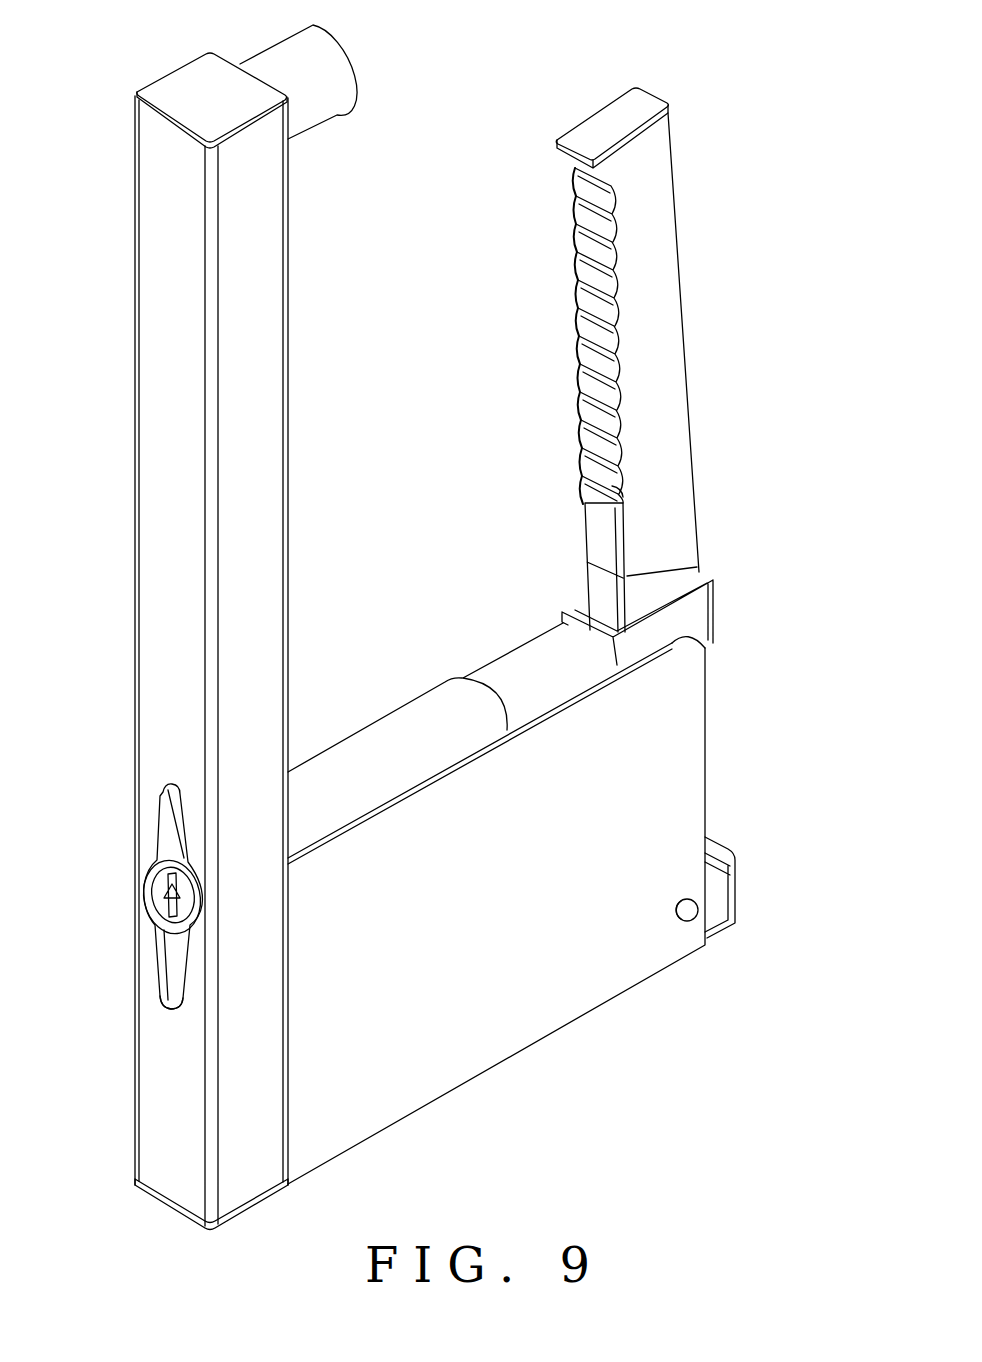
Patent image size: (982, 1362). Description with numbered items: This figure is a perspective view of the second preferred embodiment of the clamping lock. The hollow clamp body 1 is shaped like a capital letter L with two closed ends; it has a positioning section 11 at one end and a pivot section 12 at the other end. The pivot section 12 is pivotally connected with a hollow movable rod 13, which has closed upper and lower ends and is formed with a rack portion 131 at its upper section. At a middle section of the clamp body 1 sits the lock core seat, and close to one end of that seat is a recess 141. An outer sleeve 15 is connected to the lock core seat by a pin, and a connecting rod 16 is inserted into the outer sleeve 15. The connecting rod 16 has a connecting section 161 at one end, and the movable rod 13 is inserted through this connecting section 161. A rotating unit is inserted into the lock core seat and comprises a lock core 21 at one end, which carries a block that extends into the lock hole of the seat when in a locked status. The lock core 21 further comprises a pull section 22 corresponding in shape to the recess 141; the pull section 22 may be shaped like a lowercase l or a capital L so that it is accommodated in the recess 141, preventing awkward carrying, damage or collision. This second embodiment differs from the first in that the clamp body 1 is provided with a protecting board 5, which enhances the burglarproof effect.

The hollow clamp body 1 is at (258, 360).
The positioning section 11 is at (340, 62).
The pivot section 12 is at (718, 915).
The movable rod 13 is at (680, 360).
The rack portion 131 is at (578, 300).
The recess 141 is at (162, 1005).
The outer sleeve 15 is at (413, 715).
The connecting rod 16 is at (535, 652).
The connecting section 161 is at (700, 617).
The lock core 21 is at (160, 900).
The pull section 22 is at (163, 786).
The protecting board 5 is at (540, 1000).